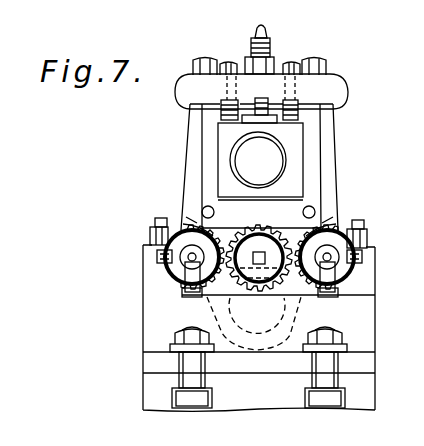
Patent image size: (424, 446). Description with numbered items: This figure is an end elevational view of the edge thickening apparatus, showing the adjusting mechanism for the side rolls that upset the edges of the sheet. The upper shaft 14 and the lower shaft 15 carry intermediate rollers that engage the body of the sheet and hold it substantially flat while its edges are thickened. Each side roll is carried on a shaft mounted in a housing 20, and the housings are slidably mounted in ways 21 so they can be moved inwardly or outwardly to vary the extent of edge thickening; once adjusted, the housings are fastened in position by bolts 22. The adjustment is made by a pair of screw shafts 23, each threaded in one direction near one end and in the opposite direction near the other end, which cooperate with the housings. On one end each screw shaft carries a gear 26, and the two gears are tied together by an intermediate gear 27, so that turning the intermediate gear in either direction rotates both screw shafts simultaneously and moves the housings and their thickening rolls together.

The upper shaft 14 is at (250, 158).
The lower shaft 15 is at (205, 312).
The housing 20 is at (322, 125).
The ways 21 is at (316, 294).
The bolts 22 is at (148, 235).
The screw shafts 23 is at (188, 259).
The gear 26 is at (205, 228).
The intermediate gear 27 is at (262, 226).